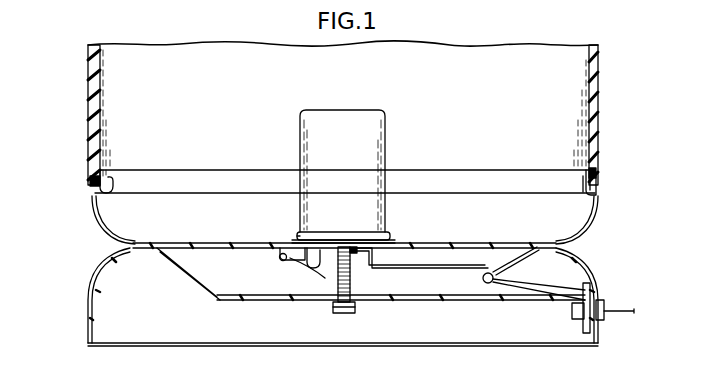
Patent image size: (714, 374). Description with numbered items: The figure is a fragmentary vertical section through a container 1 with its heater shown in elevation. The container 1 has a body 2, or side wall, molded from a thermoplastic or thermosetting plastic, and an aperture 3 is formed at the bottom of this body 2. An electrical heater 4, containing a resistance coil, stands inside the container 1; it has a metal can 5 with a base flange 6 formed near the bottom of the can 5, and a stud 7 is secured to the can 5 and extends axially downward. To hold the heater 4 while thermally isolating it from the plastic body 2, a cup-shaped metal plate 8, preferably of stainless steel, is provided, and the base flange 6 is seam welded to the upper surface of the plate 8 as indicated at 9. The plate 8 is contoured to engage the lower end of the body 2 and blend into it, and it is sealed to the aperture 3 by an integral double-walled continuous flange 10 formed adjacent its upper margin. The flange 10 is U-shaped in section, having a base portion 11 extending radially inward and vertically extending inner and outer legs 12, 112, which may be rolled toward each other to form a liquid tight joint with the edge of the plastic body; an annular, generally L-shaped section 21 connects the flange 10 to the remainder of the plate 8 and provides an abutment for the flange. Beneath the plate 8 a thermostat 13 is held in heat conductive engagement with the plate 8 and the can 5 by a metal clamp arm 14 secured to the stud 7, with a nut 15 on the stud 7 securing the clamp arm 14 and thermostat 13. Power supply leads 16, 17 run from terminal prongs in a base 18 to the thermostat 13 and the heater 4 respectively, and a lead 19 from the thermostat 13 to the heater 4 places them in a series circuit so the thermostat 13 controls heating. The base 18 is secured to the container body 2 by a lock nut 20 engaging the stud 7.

The container 1 is at (314, 117).
The container body 2 is at (90, 108).
The aperture 3 is at (90, 185).
The electrical heater 4 is at (353, 168).
The can 5 is at (385, 147).
The base flange 6 is at (390, 236).
The stud 7 is at (340, 313).
The metal plate 8 is at (222, 243).
The seam weld 9 is at (297, 240).
The flange 10 is at (108, 192).
The base portion 11 is at (590, 197).
The inner leg 12 is at (600, 180).
The thermostat 13 is at (288, 258).
The clamp arm 14 is at (300, 268).
The nut 15 is at (358, 254).
The power supply lead 16 is at (365, 272).
The power supply lead 17 is at (375, 264).
The base 18 is at (595, 262).
The lead 19 is at (318, 270).
The lock nut 20 is at (356, 306).
The L-shaped section 21 is at (586, 183).
The outer leg 112 is at (597, 172).